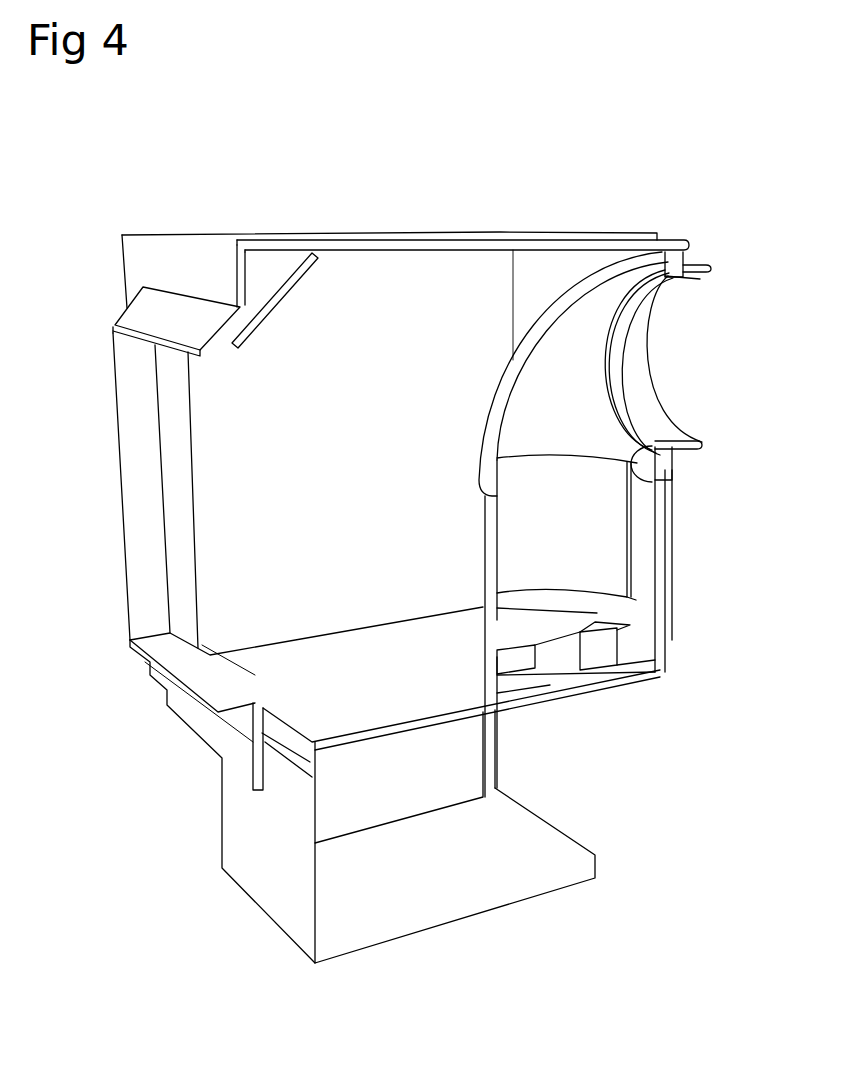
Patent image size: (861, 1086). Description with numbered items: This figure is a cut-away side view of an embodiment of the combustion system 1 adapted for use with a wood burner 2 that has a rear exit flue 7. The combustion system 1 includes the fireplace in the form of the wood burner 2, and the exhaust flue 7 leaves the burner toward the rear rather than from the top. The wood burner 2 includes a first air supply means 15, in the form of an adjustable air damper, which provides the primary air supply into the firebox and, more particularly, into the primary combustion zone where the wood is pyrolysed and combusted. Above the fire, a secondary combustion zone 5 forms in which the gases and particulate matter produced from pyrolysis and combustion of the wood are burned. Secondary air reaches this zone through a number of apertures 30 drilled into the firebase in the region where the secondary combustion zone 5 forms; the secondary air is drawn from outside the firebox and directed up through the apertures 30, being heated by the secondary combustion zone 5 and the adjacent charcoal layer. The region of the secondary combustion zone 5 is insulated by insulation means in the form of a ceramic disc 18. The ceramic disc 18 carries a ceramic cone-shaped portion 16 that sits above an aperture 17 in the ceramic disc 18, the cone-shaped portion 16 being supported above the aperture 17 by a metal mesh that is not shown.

The combustion system 1 is at (95, 238).
The wood burner 2 is at (541, 232).
The secondary combustion zone 5 is at (580, 600).
The exhaust flue 7 is at (600, 409).
The first air supply means 15 is at (266, 287).
The ceramic cone-shaped portion 16 is at (540, 613).
The aperture 17 is at (585, 630).
The ceramic disc 18 is at (510, 647).
The apertures 30 is at (565, 667).